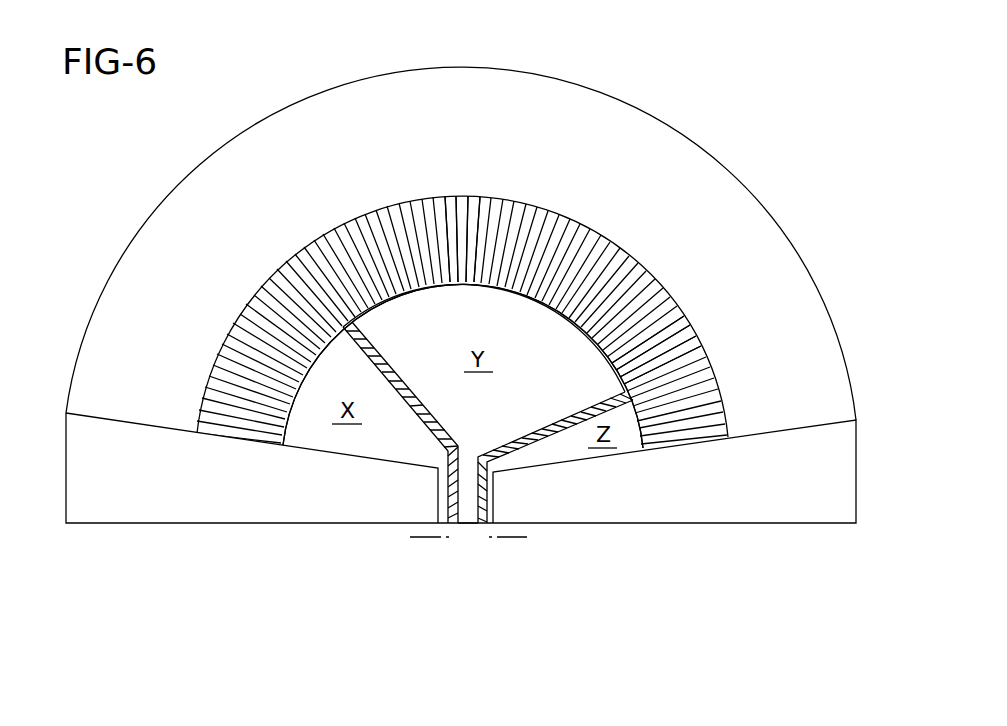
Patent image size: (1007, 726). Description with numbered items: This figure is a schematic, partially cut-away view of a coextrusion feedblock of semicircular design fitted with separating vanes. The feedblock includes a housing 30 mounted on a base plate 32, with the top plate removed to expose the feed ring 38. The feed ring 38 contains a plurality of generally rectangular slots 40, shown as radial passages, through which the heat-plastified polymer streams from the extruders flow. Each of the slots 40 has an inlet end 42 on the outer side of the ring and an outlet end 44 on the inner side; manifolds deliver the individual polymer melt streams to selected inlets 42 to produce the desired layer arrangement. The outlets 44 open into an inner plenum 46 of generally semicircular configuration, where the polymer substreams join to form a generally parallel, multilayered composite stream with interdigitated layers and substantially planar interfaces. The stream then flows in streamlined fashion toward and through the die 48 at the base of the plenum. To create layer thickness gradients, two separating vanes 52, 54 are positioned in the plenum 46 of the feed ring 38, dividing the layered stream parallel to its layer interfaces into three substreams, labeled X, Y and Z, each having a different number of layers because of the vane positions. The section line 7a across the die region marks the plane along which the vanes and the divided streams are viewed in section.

The housing 30 is at (748, 187).
The base plate 32 is at (747, 505).
The feed ring 38 is at (579, 214).
The slots 40 is at (690, 318).
The inlet ends 42 is at (455, 197).
The outlet ends 44 is at (522, 297).
The inner plenum 46 is at (436, 338).
The die 48 is at (469, 509).
The separating vane 52 is at (440, 420).
The separating vane 54 is at (556, 420).
The section line 7a is at (412, 546).